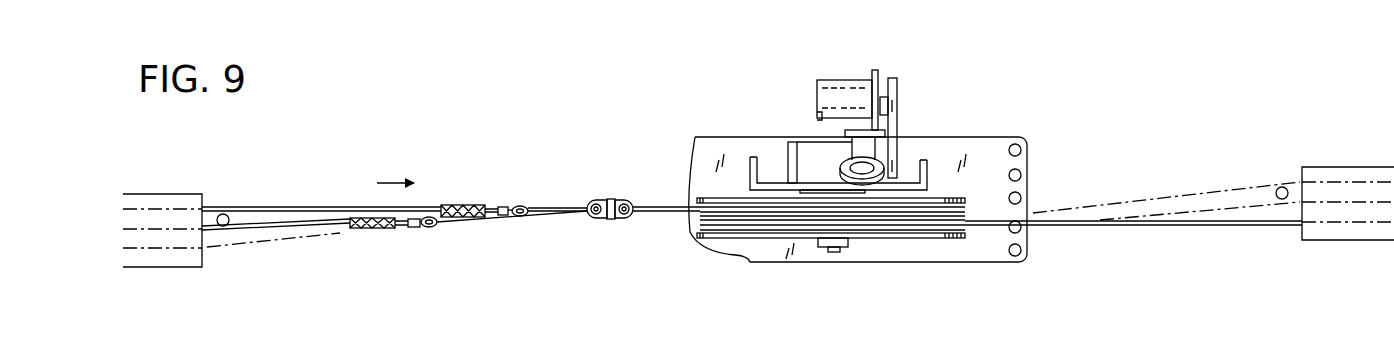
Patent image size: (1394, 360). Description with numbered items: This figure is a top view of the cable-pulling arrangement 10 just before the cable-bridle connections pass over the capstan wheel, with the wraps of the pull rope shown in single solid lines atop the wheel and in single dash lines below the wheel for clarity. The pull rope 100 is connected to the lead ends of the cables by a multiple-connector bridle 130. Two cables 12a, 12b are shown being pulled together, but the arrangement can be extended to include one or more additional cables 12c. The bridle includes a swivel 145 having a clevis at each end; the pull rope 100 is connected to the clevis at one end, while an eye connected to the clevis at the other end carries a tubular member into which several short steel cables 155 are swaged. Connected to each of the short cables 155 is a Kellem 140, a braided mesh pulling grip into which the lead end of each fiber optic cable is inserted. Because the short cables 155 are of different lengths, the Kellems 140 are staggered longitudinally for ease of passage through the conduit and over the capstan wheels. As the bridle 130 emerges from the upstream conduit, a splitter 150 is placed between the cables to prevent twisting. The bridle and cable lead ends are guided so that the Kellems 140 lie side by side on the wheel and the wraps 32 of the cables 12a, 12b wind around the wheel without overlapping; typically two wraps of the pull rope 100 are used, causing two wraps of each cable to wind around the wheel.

The cable winding apparatus 10 is at (788, 118).
The first cable 12a is at (279, 206).
The second cable 12b is at (253, 233).
The additional cable 12c is at (233, 245).
The wound cable strands on drum 32 is at (760, 244).
The pull rope 100 is at (667, 207).
The multiple-connector bridle 130 is at (551, 185).
The Kellem 140 is at (367, 228).
The swivel 145 is at (607, 200).
The splitter 150 is at (234, 217).
The short steel cables 155 is at (533, 220).